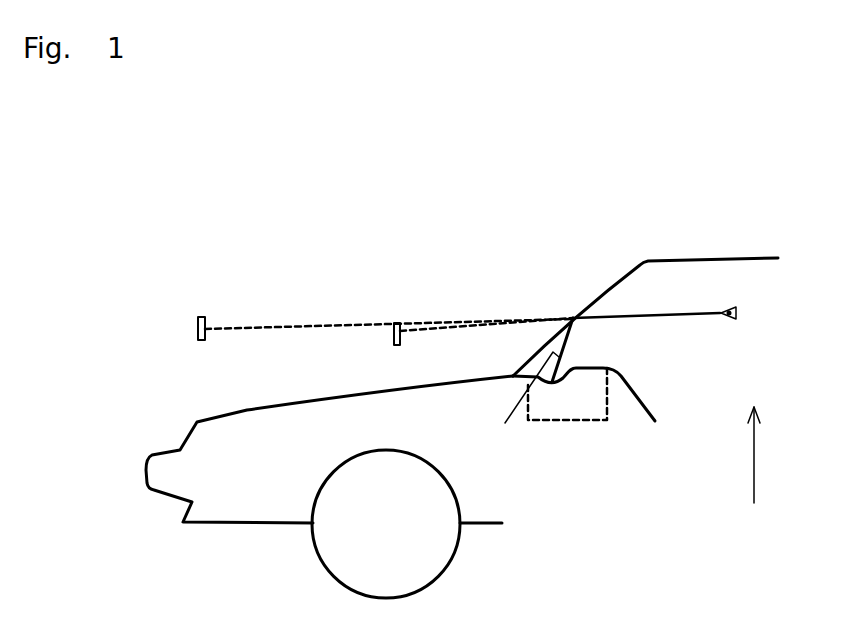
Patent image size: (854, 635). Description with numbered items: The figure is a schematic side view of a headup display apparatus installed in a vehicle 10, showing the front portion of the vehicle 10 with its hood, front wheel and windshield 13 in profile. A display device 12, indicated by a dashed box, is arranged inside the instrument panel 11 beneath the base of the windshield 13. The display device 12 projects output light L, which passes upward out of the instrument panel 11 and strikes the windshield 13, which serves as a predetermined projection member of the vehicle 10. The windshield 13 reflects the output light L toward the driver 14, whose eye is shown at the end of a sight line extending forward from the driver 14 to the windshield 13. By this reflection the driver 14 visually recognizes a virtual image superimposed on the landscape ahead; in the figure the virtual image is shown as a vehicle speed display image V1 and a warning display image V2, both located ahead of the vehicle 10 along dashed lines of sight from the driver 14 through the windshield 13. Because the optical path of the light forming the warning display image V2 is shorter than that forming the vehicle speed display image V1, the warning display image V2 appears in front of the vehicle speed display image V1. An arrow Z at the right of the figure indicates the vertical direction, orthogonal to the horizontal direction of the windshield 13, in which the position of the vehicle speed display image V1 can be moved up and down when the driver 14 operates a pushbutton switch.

The vehicle 10 is at (247, 522).
The instrument panel 11 is at (622, 370).
The display device 12 is at (573, 420).
The windshield 13 is at (598, 297).
The driver 14 is at (737, 302).
The output light L is at (526, 399).
The vehicle speed display image V1 is at (202, 317).
The warning display image V2 is at (394, 336).
The vertical direction arrow Z is at (754, 467).